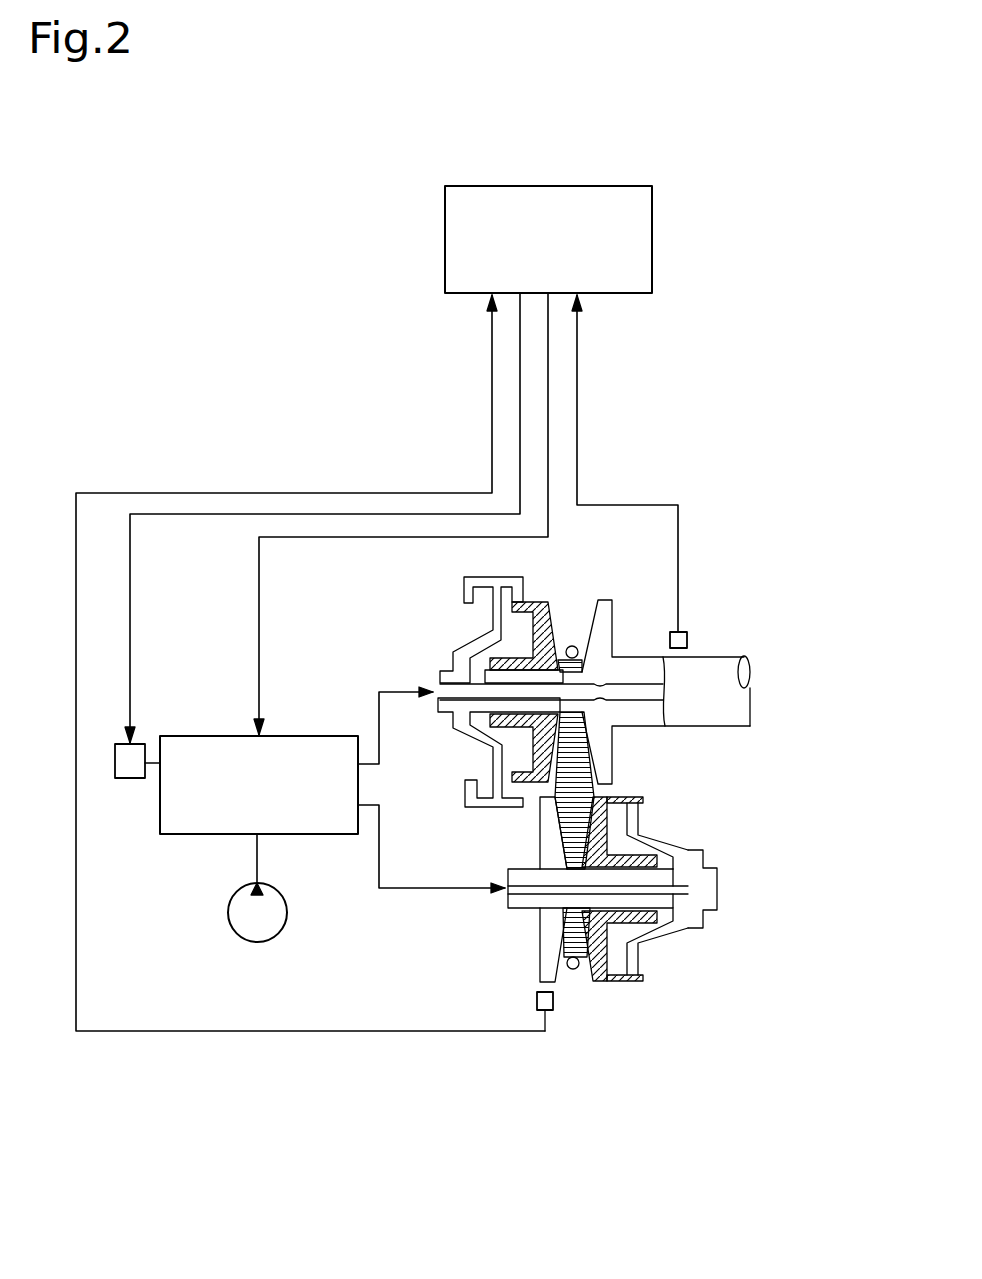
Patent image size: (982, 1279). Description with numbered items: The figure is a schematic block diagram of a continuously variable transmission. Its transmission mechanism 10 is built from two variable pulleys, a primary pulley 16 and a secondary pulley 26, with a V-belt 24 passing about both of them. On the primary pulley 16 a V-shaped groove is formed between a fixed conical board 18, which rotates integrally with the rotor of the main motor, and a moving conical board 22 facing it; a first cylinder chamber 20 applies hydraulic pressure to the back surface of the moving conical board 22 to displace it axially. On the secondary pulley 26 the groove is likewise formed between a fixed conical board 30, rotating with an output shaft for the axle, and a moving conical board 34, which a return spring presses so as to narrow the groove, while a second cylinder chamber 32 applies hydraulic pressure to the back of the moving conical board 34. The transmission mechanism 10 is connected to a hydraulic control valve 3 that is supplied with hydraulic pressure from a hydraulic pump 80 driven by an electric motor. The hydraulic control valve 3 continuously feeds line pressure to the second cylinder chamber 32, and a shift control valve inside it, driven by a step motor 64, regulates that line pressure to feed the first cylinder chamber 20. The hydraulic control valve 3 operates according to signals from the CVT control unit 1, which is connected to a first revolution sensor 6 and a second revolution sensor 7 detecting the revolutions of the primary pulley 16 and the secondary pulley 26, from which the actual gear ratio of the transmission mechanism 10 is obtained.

The CVT control unit 1 is at (460, 186).
The hydraulic control valve 3 is at (208, 834).
The first revolution sensor 6 is at (672, 633).
The second revolution sensor 7 is at (553, 1000).
The transmission mechanism 10 is at (707, 942).
The primary pulley 16 is at (443, 610).
The fixed conical board 18 is at (607, 600).
The first cylinder chamber 20 is at (517, 630).
The moving conical board 22 is at (548, 602).
The V-belt 24 is at (592, 767).
The secondary pulley 26 is at (500, 953).
The fixed conical board 30 is at (538, 840).
The second cylinder chamber 32 is at (618, 960).
The moving conical board 34 is at (607, 825).
The step motor 64 is at (115, 763).
The hydraulic pump 80 is at (285, 922).